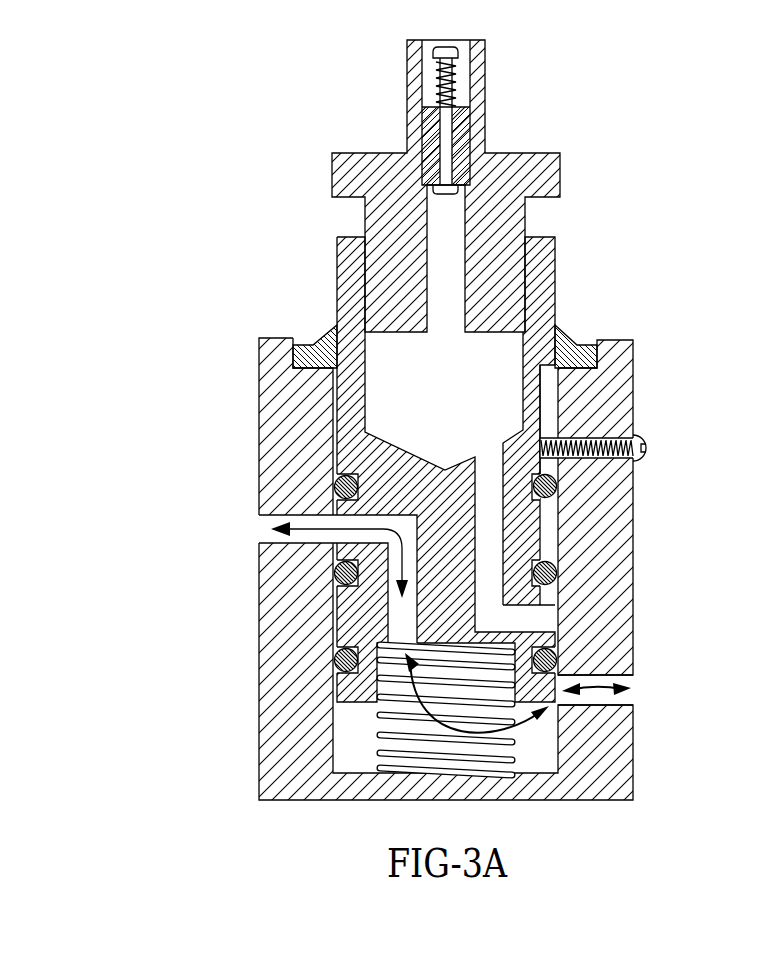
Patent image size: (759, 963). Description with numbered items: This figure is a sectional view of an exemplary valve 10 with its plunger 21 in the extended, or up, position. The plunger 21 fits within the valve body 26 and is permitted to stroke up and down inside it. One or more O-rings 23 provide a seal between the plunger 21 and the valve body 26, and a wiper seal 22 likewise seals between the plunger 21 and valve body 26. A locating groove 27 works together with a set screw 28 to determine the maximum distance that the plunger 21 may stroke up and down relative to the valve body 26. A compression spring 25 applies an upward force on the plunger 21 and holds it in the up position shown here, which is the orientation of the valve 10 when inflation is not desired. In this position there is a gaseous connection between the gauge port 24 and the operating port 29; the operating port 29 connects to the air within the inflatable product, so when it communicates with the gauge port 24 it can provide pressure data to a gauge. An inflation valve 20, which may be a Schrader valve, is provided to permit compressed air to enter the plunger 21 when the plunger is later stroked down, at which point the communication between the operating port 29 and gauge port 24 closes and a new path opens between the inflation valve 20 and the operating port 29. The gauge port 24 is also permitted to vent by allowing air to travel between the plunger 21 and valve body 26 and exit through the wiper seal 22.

The valve 10 is at (255, 233).
The inflation valve 20 is at (416, 107).
The plunger 21 is at (337, 271).
The wiper seal 22 is at (336, 328).
The O-rings 23 is at (334, 487).
The gauge port 24 is at (271, 529).
The compression spring 25 is at (380, 717).
The valve body 26 is at (259, 771).
The locating groove 27 is at (553, 407).
The set screw 28 is at (644, 462).
The operating port 29 is at (623, 692).